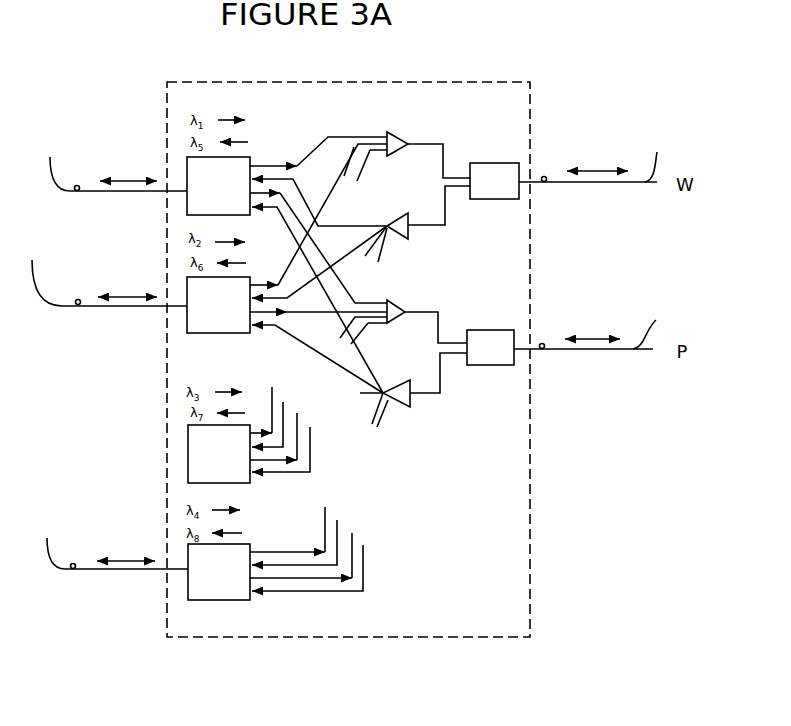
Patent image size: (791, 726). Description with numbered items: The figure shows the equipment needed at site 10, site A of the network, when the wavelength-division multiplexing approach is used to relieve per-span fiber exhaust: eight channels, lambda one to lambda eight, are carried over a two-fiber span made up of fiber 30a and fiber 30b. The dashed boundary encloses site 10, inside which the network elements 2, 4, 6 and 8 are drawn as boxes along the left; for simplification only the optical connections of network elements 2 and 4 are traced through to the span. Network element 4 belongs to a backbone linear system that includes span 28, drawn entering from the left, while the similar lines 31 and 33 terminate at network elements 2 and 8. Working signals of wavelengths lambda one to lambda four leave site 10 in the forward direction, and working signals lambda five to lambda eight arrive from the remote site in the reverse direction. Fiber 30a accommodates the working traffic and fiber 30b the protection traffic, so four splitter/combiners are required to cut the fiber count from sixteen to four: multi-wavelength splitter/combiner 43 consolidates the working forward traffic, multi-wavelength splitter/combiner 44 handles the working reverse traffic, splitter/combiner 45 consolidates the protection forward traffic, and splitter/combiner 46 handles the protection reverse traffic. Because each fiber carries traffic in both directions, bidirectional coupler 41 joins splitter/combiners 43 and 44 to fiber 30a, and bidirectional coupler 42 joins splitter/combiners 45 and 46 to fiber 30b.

The network element 2 is at (190, 205).
The network element 4 is at (187, 323).
The network element 6 is at (188, 442).
The network element 8 is at (212, 600).
The site 10 is at (527, 497).
The span 28 is at (109, 273).
The optical fiber link 31 is at (117, 162).
The optical fiber link 33 is at (114, 542).
The working fiber 30a is at (597, 158).
The protection fiber 30b is at (596, 328).
The bidirectional coupler 41 is at (489, 163).
The bidirectional coupler 42 is at (499, 365).
The multi-wavelength splitter/combiner 43 is at (392, 132).
The multi-wavelength splitter/combiner 44 is at (410, 228).
The splitter/combiner 45 is at (400, 301).
The splitter/combiner 46 is at (410, 405).